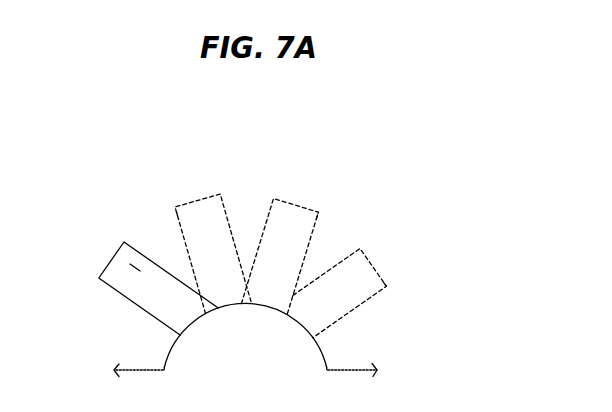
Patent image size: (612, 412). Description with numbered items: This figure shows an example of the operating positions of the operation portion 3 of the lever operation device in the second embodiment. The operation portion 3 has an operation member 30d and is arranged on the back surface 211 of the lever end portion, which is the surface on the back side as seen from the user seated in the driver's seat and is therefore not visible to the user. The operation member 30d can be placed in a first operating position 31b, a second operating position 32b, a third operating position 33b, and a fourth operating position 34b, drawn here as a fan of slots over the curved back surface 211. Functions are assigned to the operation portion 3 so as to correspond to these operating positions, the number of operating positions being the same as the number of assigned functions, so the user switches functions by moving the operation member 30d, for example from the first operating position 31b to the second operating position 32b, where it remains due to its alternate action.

The operation portion 3 is at (475, 147).
The first operating position 31b is at (107, 257).
The second operating position 32b is at (196, 196).
The third operating position 33b is at (302, 194).
The fourth operating position 34b is at (392, 258).
The operation member 30d is at (173, 227).
The back surface 211 is at (355, 369).